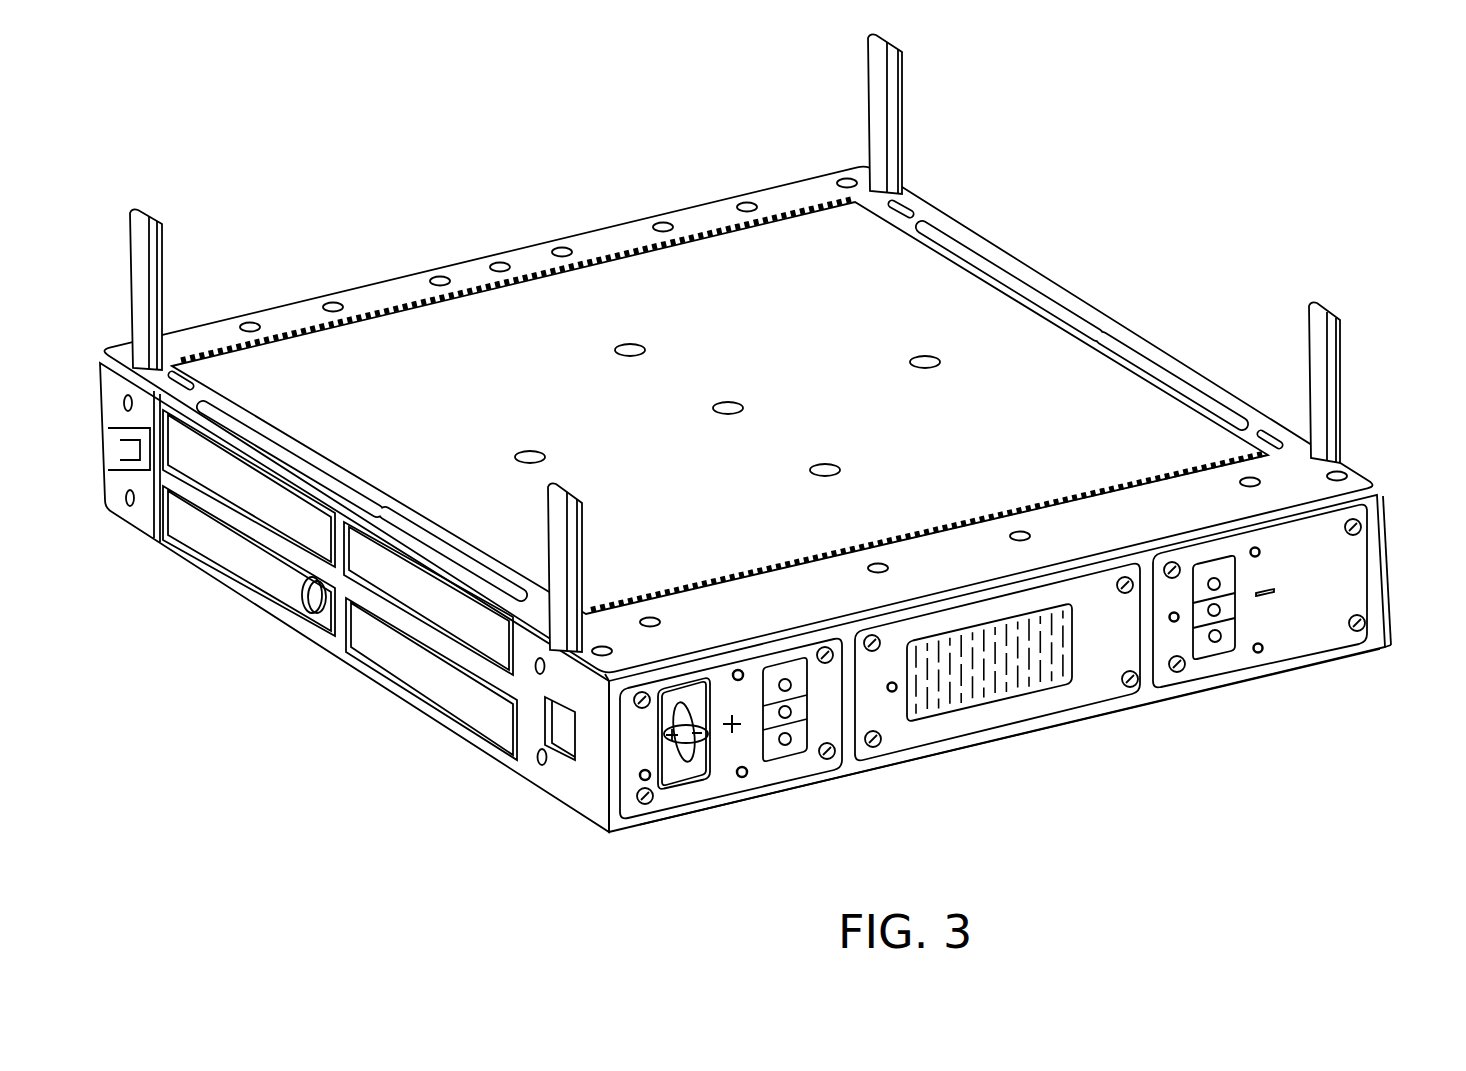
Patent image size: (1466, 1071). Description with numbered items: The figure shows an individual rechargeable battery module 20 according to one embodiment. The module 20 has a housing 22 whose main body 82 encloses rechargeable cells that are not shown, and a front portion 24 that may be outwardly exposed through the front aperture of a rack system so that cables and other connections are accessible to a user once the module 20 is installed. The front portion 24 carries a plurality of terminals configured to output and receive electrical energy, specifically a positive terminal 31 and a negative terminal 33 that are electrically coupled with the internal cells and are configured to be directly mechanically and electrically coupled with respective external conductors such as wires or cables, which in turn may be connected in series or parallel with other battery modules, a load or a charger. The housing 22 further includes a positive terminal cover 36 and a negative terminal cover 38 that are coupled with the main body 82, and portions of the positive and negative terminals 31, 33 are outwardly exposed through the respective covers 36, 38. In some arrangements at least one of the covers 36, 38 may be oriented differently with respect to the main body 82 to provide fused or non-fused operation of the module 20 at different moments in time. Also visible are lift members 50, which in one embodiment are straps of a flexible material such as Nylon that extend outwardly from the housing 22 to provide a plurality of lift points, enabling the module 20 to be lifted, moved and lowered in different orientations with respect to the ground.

The rechargeable battery module 20 is at (1370, 388).
The housing 22 is at (1068, 288).
The front portion 24 is at (1390, 569).
The positive terminal 31 is at (791, 766).
The negative terminal 33 is at (1243, 616).
The positive terminal cover 36 is at (665, 819).
The negative terminal cover 38 is at (1348, 649).
The lift members 50 is at (899, 104).
The main body 82 is at (969, 443).